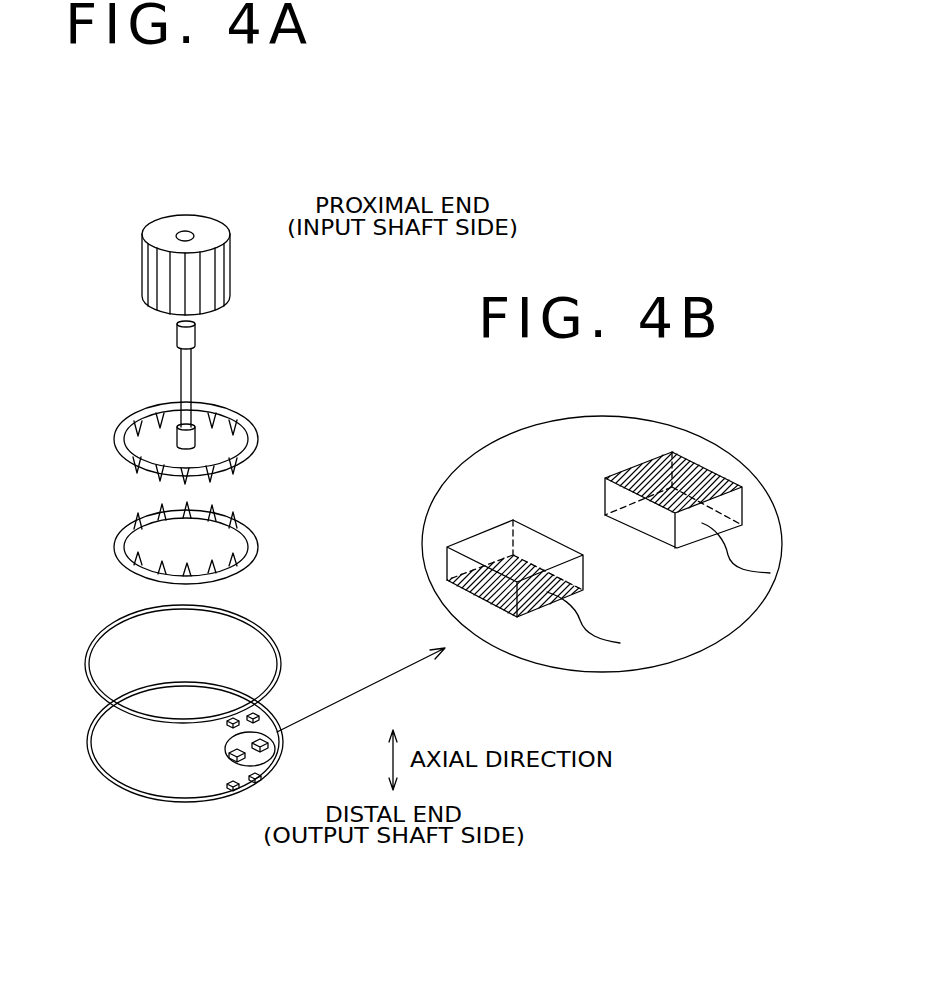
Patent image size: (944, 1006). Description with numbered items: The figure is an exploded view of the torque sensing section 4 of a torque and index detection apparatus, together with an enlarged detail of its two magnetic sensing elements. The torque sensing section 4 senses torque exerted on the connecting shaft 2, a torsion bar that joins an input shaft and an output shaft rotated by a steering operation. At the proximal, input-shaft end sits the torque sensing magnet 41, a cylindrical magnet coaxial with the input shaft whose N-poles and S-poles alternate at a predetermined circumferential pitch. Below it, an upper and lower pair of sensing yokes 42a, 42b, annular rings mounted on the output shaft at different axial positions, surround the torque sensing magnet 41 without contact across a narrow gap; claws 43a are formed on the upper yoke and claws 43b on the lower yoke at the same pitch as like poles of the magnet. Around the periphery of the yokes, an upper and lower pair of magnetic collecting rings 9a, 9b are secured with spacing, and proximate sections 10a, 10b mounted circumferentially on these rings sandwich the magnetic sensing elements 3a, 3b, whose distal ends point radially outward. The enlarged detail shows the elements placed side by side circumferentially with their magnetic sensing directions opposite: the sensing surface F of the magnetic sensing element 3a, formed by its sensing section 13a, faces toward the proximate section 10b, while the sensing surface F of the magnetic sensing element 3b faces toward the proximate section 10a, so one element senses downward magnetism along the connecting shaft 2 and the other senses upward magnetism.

In FIG. 4A, the torque sensing section 4 is at (74, 177).
In FIG. 4A, the torque sensing magnet 41 is at (141, 252).
In FIG. 4A, the connecting shaft 2 is at (181, 362).
In FIG. 4A, the sensing yoke 42a is at (128, 422).
In FIG. 4A, the claws 43a is at (212, 418).
In FIG. 4A, the sensing yoke 42b is at (128, 534).
In FIG. 4A, the claws 43b is at (211, 514).
In FIG. 4A, the magnetic collecting ring 9a is at (98, 642).
In FIG. 4A, the magnetic collecting ring 9b is at (98, 766).
In FIG. 4A, the proximate section 10a is at (226, 738).
In FIG. 4A, the proximate section 10b is at (268, 778).
In FIG. 4B, the magnetic sensing element 3a is at (478, 552).
In FIG. 4B, the magnetic sensing element 3b is at (732, 507).
In FIG. 4B, the sensing section 13a is at (708, 468).
In FIG. 4B, the sensing surface F is at (680, 460).